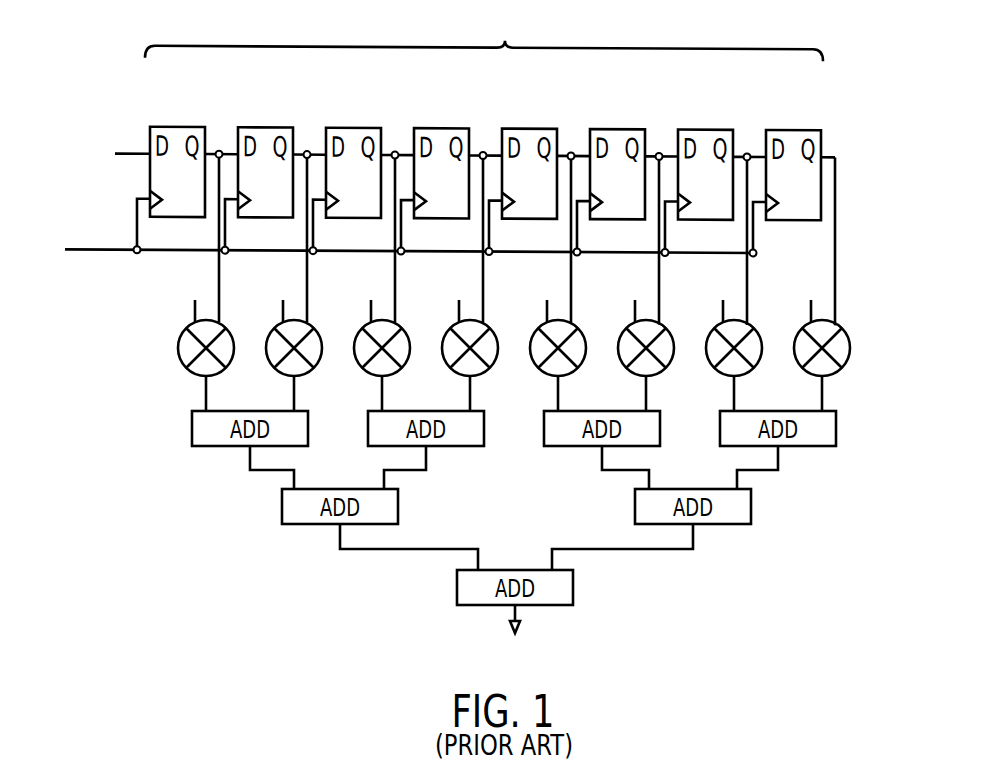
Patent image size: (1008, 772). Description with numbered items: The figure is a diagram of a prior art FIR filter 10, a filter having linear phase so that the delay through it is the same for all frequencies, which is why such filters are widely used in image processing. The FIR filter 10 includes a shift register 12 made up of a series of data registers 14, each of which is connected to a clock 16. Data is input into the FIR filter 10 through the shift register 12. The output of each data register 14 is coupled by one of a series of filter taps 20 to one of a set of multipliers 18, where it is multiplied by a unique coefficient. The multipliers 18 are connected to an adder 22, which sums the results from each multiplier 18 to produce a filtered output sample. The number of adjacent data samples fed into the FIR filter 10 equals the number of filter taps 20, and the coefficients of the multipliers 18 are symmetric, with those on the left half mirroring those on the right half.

The FIR filter 10 is at (862, 82).
The shift register 12 is at (484, 36).
The data register 14 is at (177, 126).
The clock 16 is at (98, 251).
The multiplier 18 is at (178, 348).
The filter tap 20 is at (218, 265).
The adder 22 is at (855, 414).